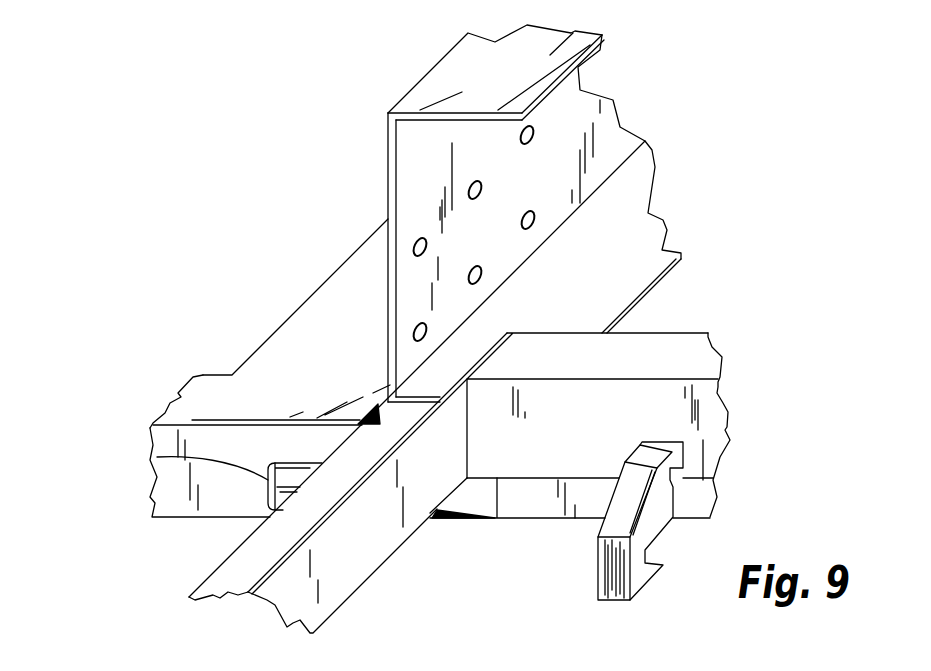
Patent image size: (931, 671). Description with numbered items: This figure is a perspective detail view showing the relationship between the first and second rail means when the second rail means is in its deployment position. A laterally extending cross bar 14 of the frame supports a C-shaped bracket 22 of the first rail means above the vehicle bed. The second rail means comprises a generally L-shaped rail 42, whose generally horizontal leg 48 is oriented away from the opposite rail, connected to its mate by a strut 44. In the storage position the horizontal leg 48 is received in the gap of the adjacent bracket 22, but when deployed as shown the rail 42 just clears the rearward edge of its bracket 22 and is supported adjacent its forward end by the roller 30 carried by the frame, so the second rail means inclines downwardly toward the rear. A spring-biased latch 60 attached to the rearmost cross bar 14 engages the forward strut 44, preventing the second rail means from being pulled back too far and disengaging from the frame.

The cross bar 14 is at (203, 390).
The C-shaped bracket 22 is at (418, 147).
The roller 30 is at (160, 460).
The L-shaped rail 42 is at (345, 560).
The strut 44 is at (652, 352).
The horizontal leg 48 is at (247, 552).
The latch 60 is at (650, 527).